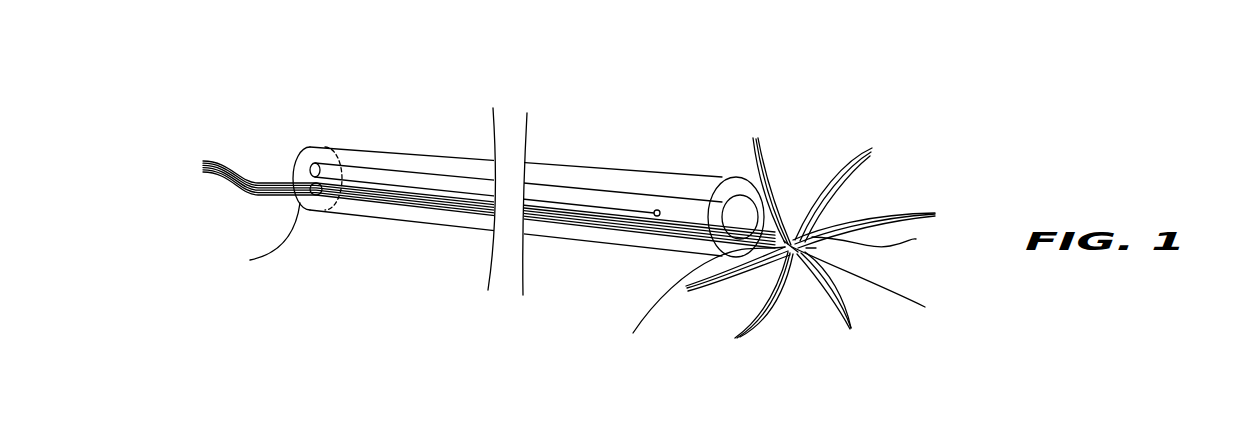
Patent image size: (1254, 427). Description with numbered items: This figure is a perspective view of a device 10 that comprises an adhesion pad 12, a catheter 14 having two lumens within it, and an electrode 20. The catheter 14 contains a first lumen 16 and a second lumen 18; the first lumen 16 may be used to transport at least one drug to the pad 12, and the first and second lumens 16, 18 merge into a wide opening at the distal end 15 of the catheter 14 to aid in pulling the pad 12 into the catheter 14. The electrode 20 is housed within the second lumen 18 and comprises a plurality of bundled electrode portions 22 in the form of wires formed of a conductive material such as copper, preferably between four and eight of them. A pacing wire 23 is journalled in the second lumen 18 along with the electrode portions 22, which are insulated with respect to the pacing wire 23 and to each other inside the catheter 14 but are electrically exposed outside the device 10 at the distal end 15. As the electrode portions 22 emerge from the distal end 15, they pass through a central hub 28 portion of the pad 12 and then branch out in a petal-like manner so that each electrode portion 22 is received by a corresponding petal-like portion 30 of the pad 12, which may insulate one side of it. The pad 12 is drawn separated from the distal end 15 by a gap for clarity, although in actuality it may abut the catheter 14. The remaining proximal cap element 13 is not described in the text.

The device 10 is at (651, 124).
The adhesion pad 12 is at (823, 252).
The proximal end cap 13 is at (352, 155).
The catheter 14 is at (675, 174).
The distal end 15 is at (710, 185).
The first lumen 16 is at (309, 168).
The second lumen 18 is at (300, 197).
The electrode 20 is at (450, 197).
The electrode portions 22 is at (940, 148).
The pacing wire 23 is at (297, 230).
The central hub 28 is at (881, 236).
The petal-like portions 30 is at (757, 140).